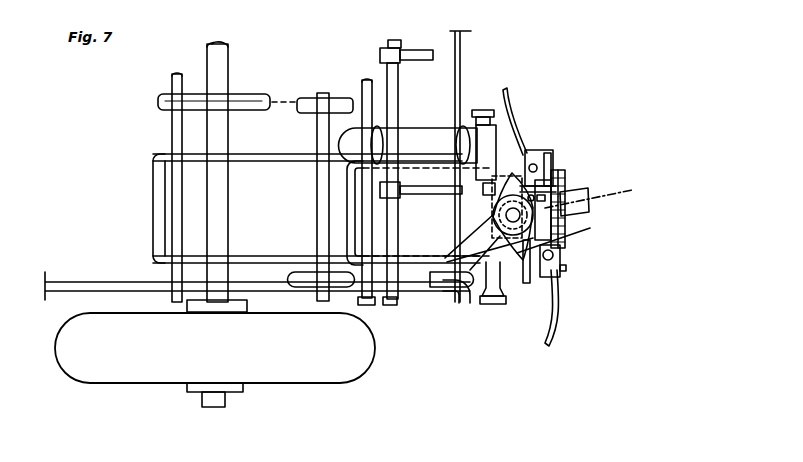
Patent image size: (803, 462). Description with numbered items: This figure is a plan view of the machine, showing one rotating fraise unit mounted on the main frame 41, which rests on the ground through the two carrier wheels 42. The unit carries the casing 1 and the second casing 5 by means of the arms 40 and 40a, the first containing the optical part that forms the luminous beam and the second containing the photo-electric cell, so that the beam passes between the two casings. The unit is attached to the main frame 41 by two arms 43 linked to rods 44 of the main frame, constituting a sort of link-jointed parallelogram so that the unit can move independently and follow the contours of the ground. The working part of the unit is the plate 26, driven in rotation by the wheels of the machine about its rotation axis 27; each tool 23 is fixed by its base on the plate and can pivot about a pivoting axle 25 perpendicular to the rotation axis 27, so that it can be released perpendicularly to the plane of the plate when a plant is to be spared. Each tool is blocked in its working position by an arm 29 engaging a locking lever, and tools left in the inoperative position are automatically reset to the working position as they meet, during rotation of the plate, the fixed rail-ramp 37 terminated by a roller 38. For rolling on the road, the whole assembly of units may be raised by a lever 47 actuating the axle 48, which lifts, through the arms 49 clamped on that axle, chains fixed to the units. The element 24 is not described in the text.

The casing 1 is at (488, 292).
The second casing 5 is at (494, 128).
The tool 23 is at (513, 99).
The bracket 24 is at (531, 150).
The pivoting axle 25 is at (540, 161).
The plate 26 is at (568, 240).
The rotation axis 27 is at (589, 203).
The arm 29 is at (552, 170).
The rail-ramp 37 is at (529, 285).
The roller 38 is at (505, 207).
The arm 40 is at (455, 303).
The arm 40a is at (412, 136).
The main frame 41 is at (86, 288).
The carrier wheel 42 is at (62, 318).
The arm 43 is at (250, 160).
The rod 44 is at (172, 82).
The lever 47 is at (410, 56).
The axle 48 is at (398, 75).
The arm 49 is at (414, 188).